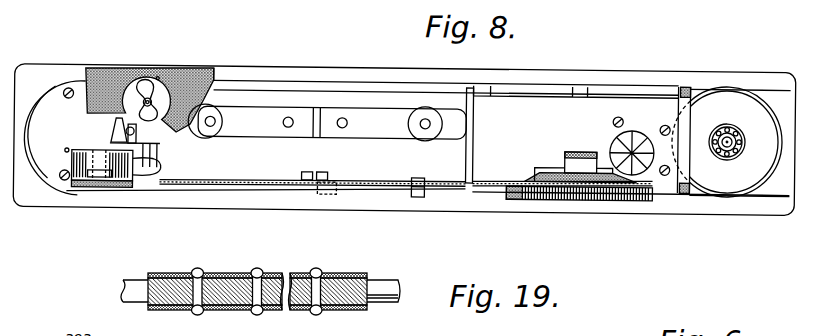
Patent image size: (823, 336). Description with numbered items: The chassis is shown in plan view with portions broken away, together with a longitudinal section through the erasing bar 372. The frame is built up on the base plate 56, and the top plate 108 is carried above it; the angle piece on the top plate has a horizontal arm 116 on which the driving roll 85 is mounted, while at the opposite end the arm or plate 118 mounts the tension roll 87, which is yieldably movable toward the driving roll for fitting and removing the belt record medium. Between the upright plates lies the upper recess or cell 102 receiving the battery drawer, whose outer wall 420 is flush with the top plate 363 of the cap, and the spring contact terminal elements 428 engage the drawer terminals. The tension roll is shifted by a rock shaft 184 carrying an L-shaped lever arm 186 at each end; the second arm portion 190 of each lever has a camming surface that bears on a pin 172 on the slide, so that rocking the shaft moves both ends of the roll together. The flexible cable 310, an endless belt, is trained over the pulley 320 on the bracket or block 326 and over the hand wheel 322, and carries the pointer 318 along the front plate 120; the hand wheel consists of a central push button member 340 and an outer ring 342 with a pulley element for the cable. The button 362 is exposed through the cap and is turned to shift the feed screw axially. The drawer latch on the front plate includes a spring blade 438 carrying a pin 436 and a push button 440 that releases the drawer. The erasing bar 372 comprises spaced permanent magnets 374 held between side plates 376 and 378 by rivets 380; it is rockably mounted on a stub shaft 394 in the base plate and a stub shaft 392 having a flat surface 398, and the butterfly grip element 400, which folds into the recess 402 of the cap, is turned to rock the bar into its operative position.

In FIG. 8, the base plate 56 is at (730, 208).
In FIG. 8, the driving roll 85 is at (765, 88).
In FIG. 8, the tension roll 87 is at (52, 87).
In FIG. 8, the upper recess or cell 102 is at (362, 101).
In FIG. 8, the top plate 108 is at (548, 103).
In FIG. 8, the horizontal arm 116 is at (750, 182).
In FIG. 8, the arm or plate 118 is at (50, 171).
In FIG. 8, the front plate 120 is at (213, 194).
In FIG. 8, the pin 172 is at (113, 128).
In FIG. 8, the rock shaft 184 is at (158, 165).
In FIG. 8, the lever arm 186 is at (143, 184).
In FIG. 8, the second arm portion 190 is at (110, 138).
In FIG. 8, the flexible cable 310 is at (492, 183).
In FIG. 8, the pointer 318 is at (418, 178).
In FIG. 8, the pulley 320 is at (68, 184).
In FIG. 8, the hand wheel 322 is at (632, 201).
In FIG. 8, the bracket or block 326 is at (88, 189).
In FIG. 8, the central push button member 340 is at (580, 198).
In FIG. 8, the outer ring 342 is at (522, 198).
In FIG. 8, the button 362 is at (638, 137).
In FIG. 8, the top plate of the cap 363 is at (96, 81).
In FIG. 19, the erasing bar 372 is at (365, 273).
In FIG. 19, the permanent magnets 374 is at (275, 277).
In FIG. 19, the side plate 376 is at (338, 280).
In FIG. 19, the side plate 378 is at (352, 308).
In FIG. 19, the rivets 380 is at (255, 290).
In FIG. 8, the stub shaft 392 is at (195, 74).
In FIG. 19, the stub shaft 392 is at (145, 278).
In FIG. 19, the stub shaft 394 is at (392, 280).
In FIG. 19, the flat surface 398 is at (135, 292).
In FIG. 8, the butterfly grip element 400 is at (143, 94).
In FIG. 8, the recess 402 is at (160, 78).
In FIG. 8, the outer wall 420 is at (215, 75).
In FIG. 8, the spring contact terminal elements 428 is at (327, 132).
In FIG. 8, the pin 436 is at (303, 177).
In FIG. 8, the spring blade 438 is at (323, 176).
In FIG. 8, the push button 440 is at (340, 190).